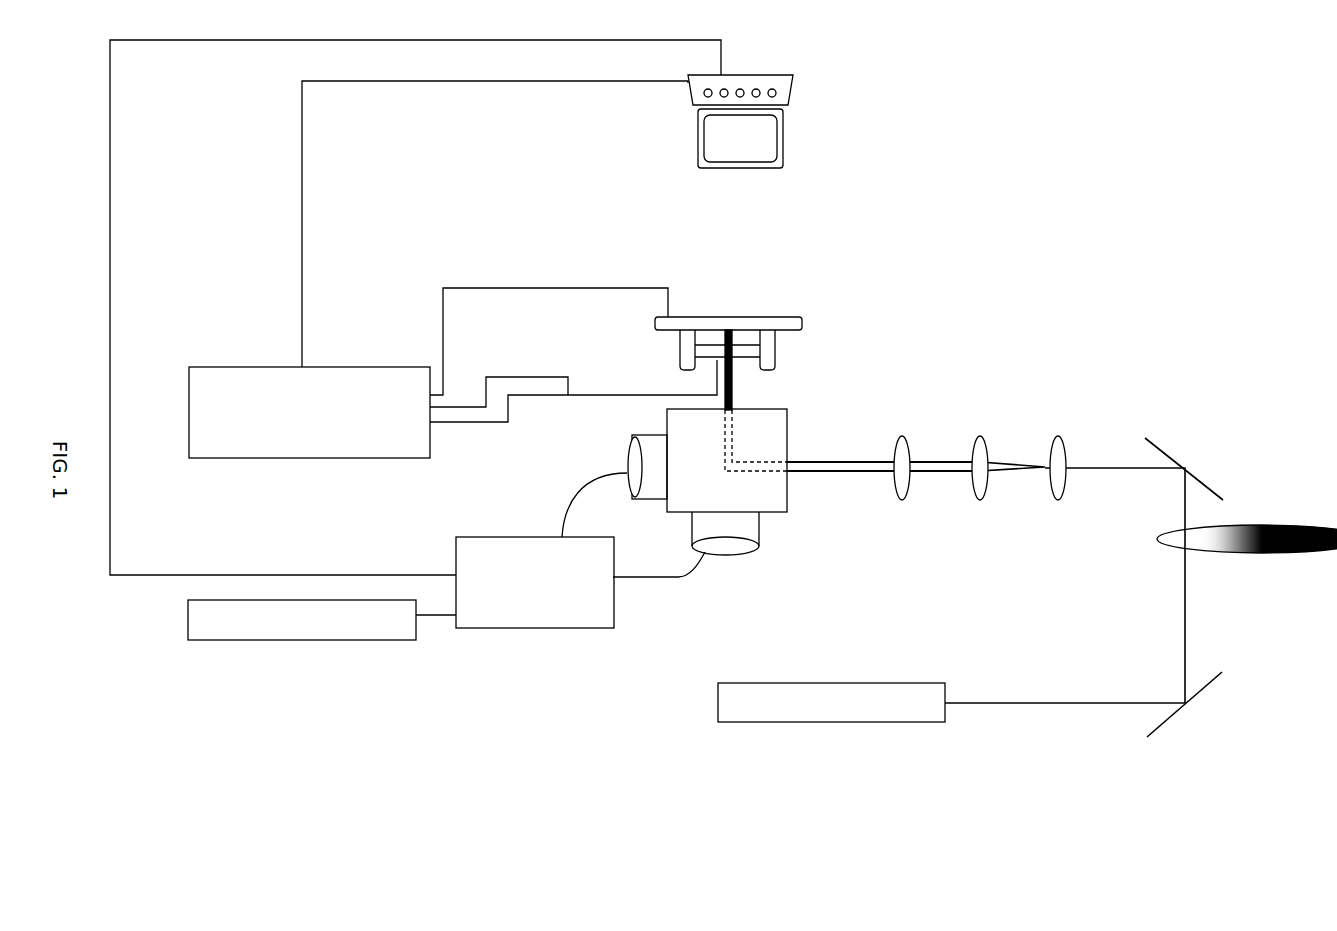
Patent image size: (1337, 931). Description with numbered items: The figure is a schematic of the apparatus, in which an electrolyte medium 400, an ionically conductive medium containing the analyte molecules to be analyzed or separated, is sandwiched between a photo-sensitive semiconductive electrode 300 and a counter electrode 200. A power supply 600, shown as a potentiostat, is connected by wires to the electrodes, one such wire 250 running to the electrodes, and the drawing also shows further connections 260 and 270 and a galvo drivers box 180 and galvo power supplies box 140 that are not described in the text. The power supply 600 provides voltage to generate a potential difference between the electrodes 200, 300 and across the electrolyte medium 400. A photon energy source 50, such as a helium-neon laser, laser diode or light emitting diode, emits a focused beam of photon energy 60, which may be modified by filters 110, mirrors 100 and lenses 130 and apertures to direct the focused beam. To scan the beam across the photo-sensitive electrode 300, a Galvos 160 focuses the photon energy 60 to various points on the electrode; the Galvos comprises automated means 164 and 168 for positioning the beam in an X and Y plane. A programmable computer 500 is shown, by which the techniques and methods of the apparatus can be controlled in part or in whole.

The photon energy source 50 is at (832, 726).
The beam of photon energy 60 is at (1082, 707).
The mirrors 100 is at (1187, 454).
The filters 110 is at (1300, 557).
The lenses 130 is at (905, 433).
The galvo power supplies 140 is at (313, 643).
The Galvos 160 is at (783, 515).
The automated means 164 is at (743, 554).
The automated means 168 is at (625, 443).
The galvo drivers 180 is at (556, 632).
The counter electrode 200 is at (750, 348).
The wire 250 is at (661, 392).
The electrode wire 260 is at (557, 375).
The electrode wire 270 is at (567, 285).
The photo-sensitive semiconductive electrode 300 is at (809, 324).
The electrolyte medium 400 is at (722, 317).
The programmable computer 500 is at (792, 147).
The power supply 600 is at (326, 462).